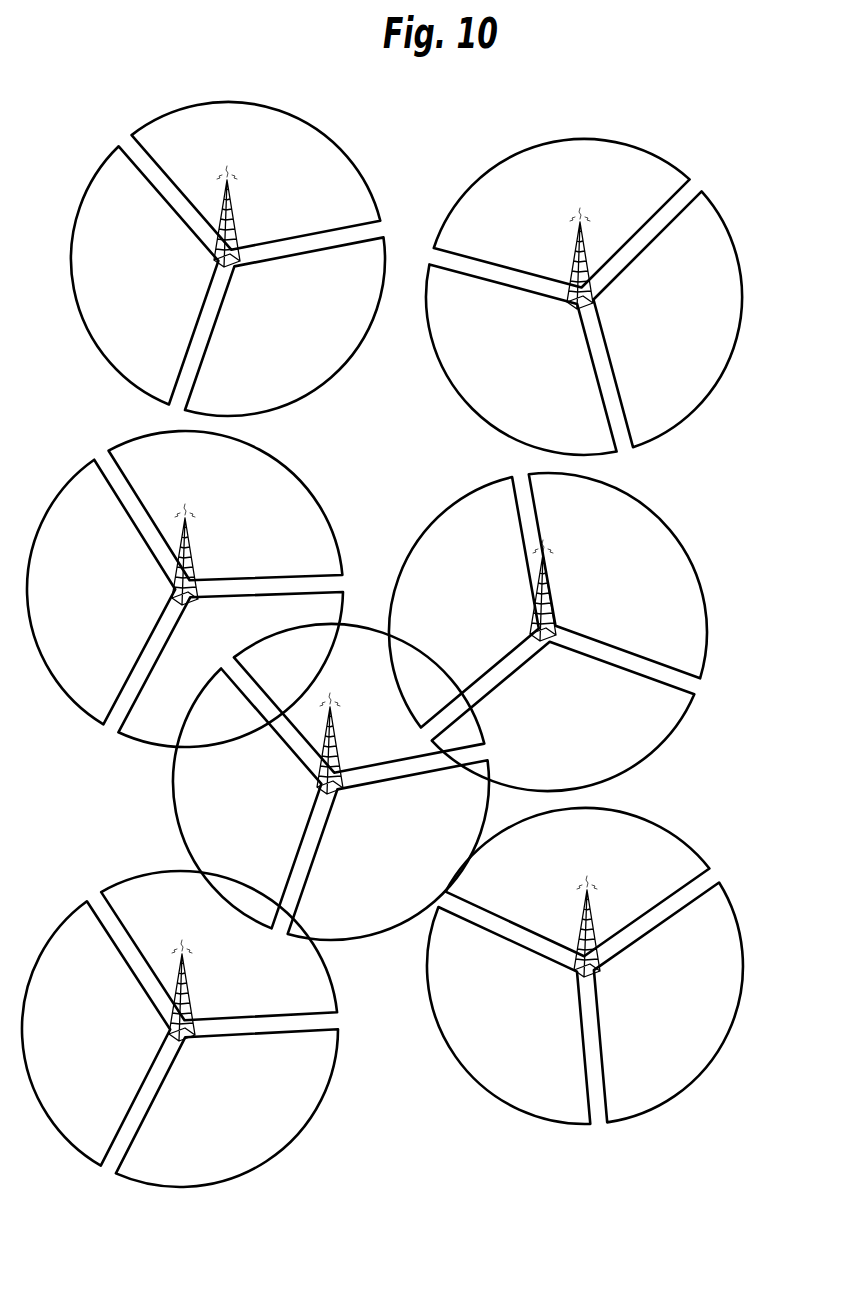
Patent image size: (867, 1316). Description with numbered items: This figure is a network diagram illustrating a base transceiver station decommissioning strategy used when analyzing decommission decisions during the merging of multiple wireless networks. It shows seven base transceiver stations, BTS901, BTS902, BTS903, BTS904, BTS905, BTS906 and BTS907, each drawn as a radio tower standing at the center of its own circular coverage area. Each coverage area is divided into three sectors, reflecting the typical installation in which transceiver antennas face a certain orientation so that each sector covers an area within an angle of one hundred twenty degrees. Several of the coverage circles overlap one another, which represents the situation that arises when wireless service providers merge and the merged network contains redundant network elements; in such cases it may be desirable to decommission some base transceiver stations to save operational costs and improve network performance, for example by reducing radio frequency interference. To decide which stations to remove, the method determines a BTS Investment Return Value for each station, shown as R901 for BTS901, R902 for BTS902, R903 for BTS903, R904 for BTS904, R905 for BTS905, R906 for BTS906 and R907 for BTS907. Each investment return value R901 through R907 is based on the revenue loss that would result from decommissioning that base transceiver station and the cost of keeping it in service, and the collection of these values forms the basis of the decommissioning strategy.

The BTS Investment Return Value R901 is at (228, 259).
The base transceiver station BTS901 is at (240, 227).
The BTS Investment Return Value R902 is at (584, 297).
The base transceiver station BTS902 is at (569, 264).
The BTS Investment Return Value R903 is at (185, 589).
The base transceiver station BTS903 is at (200, 578).
The BTS Investment Return Value R904 is at (548, 632).
The base transceiver station BTS904 is at (557, 611).
The BTS Investment Return Value R905 is at (331, 782).
The base transceiver station BTS905 is at (344, 763).
The BTS Investment Return Value R906 is at (180, 1029).
The base transceiver station BTS906 is at (194, 1007).
The BTS Investment Return Value R907 is at (585, 966).
The base transceiver station BTS907 is at (600, 957).